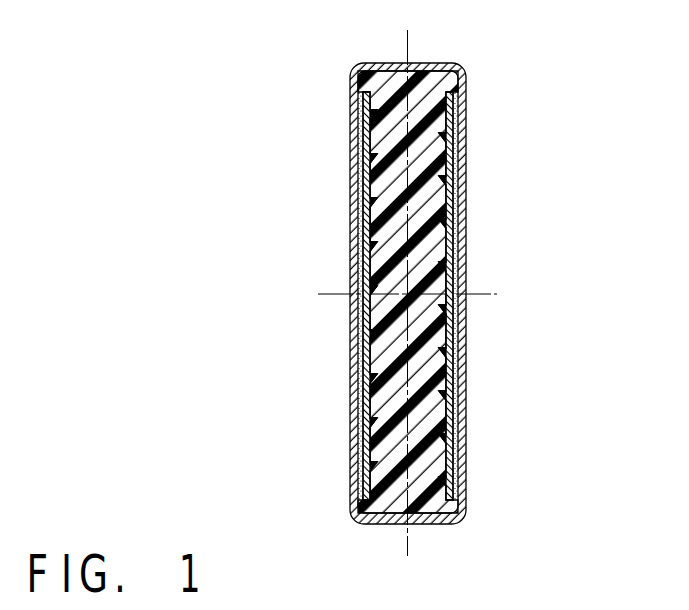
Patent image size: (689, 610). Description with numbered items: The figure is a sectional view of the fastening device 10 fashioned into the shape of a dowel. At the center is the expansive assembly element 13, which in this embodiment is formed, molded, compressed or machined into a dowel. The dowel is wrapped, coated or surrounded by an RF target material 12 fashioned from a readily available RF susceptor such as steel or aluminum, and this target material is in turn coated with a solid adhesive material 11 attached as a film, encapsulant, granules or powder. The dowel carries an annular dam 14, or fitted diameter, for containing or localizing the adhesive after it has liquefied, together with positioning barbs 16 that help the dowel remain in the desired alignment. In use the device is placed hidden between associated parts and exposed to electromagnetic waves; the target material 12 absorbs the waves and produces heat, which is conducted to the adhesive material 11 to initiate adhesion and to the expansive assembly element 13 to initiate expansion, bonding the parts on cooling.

The fastening device 10 is at (461, 266).
The solid adhesive material 11 is at (456, 242).
The target material 12 is at (462, 82).
The expansive assembly element 13 is at (428, 247).
The annular dam 14 is at (458, 345).
The positioning barbs 16 is at (460, 368).